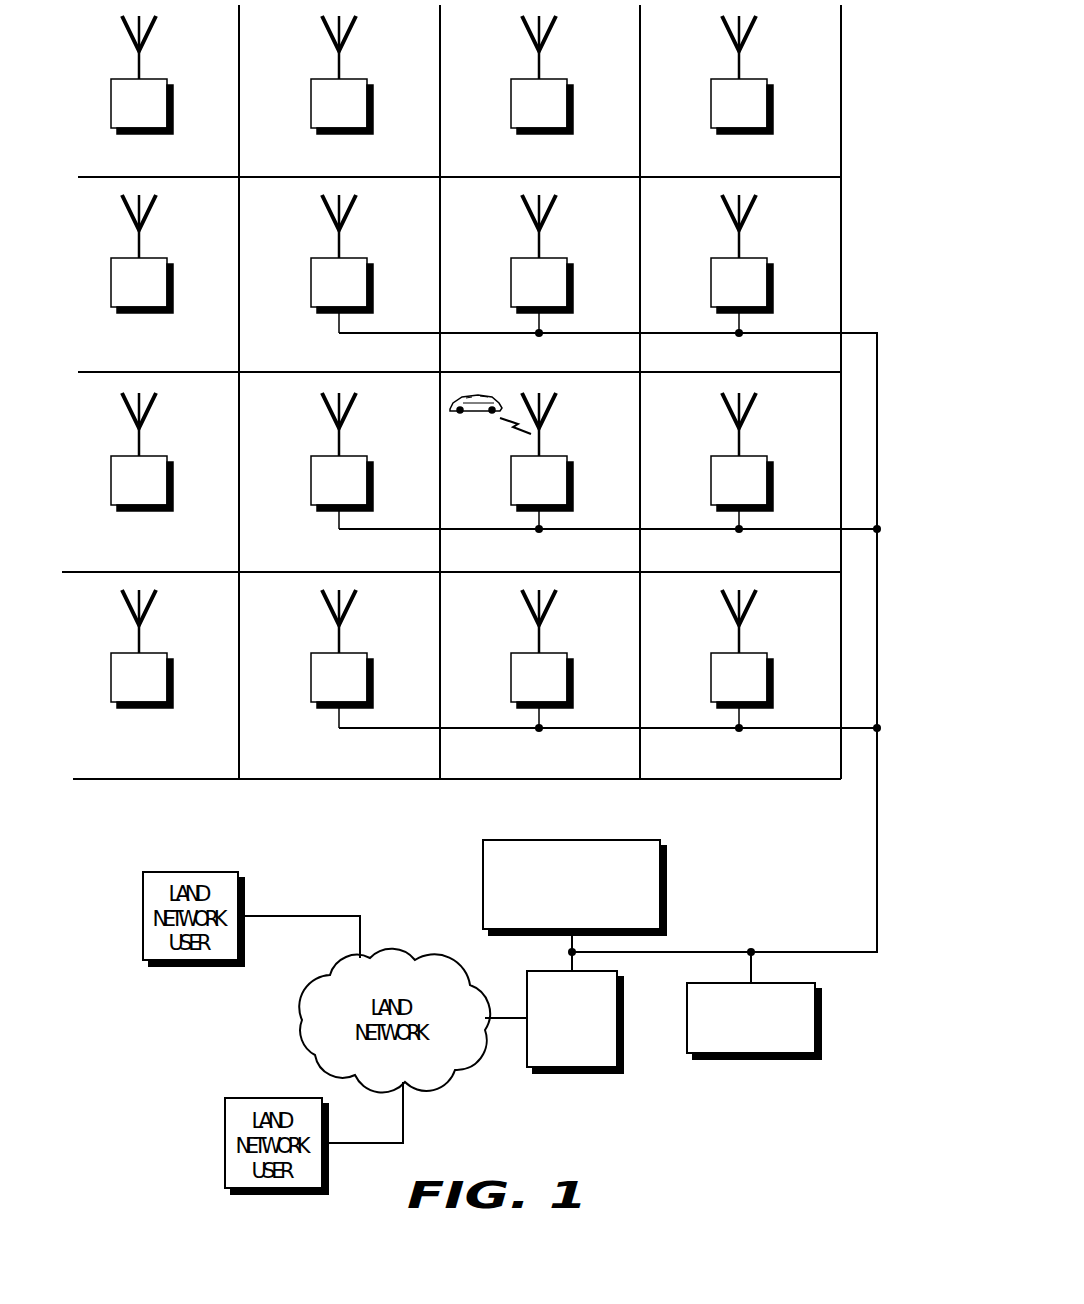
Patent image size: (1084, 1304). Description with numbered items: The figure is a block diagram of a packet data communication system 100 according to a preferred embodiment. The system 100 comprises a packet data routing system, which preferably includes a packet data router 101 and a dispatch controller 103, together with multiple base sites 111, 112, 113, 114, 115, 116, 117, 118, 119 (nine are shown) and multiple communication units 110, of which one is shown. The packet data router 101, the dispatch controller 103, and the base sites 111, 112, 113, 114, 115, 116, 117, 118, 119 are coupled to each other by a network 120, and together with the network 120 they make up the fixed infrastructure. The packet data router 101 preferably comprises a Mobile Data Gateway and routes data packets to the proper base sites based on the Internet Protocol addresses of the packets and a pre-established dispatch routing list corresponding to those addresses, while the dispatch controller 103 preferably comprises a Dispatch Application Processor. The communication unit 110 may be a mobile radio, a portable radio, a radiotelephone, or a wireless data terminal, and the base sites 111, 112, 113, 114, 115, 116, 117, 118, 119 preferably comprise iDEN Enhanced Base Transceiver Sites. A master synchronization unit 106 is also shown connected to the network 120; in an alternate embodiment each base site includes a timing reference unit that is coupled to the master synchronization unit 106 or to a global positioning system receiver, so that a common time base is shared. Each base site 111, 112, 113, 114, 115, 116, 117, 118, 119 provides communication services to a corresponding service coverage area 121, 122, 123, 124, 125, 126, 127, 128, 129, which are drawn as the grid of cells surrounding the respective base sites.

The packet data communication system 100 is at (889, 1118).
The packet data router 101 is at (580, 1068).
The dispatch controller 103 is at (757, 1054).
The master synchronization unit 106 is at (483, 884).
The communication unit 110 is at (476, 412).
The base site 111 is at (521, 486).
The base site 112 is at (321, 486).
The base site 113 is at (724, 486).
The base site 114 is at (321, 289).
The base site 115 is at (521, 289).
The base site 116 is at (724, 289).
The base site 117 is at (321, 684).
The base site 118 is at (521, 684).
The base site 119 is at (724, 684).
The network 120 is at (877, 864).
The service coverage area 121 is at (593, 381).
The service coverage area 122 is at (393, 381).
The service coverage area 123 is at (783, 381).
The service coverage area 124 is at (393, 188).
The service coverage area 125 is at (593, 188).
The service coverage area 126 is at (783, 188).
The service coverage area 127 is at (393, 581).
The service coverage area 128 is at (593, 581).
The service coverage area 129 is at (783, 581).